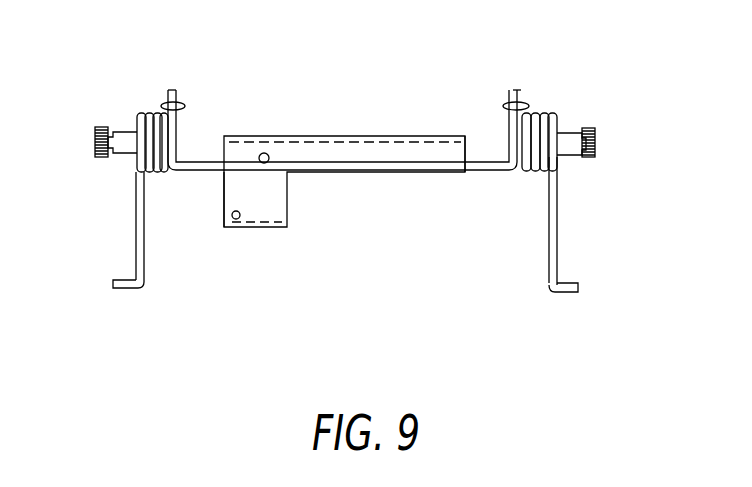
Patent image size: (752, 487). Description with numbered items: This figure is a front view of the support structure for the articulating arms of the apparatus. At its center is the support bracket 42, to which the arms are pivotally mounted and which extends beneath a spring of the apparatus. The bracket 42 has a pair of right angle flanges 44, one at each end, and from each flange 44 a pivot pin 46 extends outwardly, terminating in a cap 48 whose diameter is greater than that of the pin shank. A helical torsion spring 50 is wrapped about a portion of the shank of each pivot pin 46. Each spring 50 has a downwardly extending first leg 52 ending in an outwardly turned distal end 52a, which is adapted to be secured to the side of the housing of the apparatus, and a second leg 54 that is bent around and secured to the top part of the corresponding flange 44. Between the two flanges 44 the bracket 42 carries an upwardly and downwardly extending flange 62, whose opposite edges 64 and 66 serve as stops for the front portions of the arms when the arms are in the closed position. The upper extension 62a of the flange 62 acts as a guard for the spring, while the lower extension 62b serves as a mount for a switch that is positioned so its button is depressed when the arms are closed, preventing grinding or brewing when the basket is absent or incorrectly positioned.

The bracket 42 is at (488, 172).
The right angle flange 44 is at (176, 95).
The pivot pin 46 is at (123, 132).
The cap 48 is at (100, 125).
The helical torsion spring 50 is at (144, 113).
The first leg 52 is at (135, 237).
The outwardly turned distal end 52a is at (125, 290).
The second leg 54 is at (185, 105).
The flange 62 is at (398, 173).
The upper extension 62a is at (350, 136).
The lower extension 62b is at (287, 222).
The edge 64 is at (223, 203).
The edge 66 is at (477, 141).